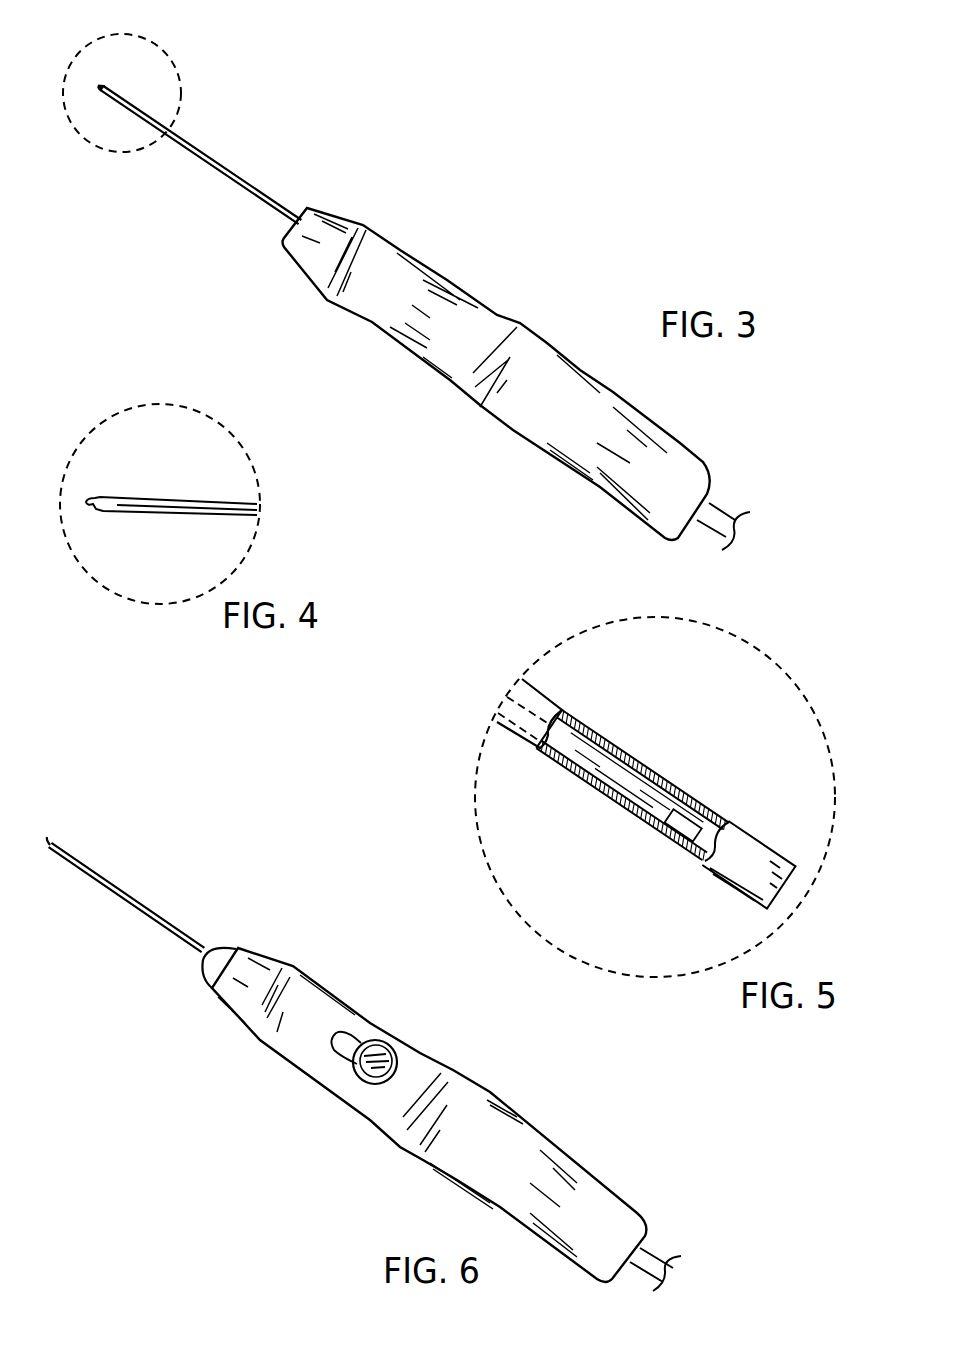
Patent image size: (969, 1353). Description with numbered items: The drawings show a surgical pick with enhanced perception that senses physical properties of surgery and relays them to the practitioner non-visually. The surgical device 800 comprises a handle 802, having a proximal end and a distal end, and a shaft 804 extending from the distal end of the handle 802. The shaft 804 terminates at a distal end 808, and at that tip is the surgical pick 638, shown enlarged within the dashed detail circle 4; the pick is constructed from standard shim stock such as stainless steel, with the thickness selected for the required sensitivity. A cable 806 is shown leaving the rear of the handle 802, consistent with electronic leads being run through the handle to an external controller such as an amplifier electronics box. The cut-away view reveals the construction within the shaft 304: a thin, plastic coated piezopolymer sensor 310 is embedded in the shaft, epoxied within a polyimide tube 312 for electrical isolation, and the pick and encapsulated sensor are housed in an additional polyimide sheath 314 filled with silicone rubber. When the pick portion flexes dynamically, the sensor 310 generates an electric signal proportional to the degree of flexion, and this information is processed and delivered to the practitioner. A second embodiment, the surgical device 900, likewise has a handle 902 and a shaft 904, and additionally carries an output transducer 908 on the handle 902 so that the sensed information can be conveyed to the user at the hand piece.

In FIG. 3, the detail circle for FIG. 4 is at (118, 34).
In FIG. 3, the surgical device 800 is at (620, 306).
In FIG. 3, the handle 802 is at (367, 226).
In FIG. 3, the shaft 804 is at (197, 148).
In FIG. 3, the cable 806 is at (722, 511).
In FIG. 3, the distal end 808 is at (112, 89).
In FIG. 4, the surgical pick 638 is at (90, 497).
In FIG. 5, the shaft 304 is at (795, 848).
In FIG. 5, the sensor 310 is at (636, 778).
In FIG. 5, the polyimide tube 312 is at (697, 814).
In FIG. 5, the polyimide sheath 314 is at (710, 831).
In FIG. 6, the surgical device 900 is at (597, 1122).
In FIG. 6, the handle 902 is at (438, 1062).
In FIG. 6, the shaft 904 is at (112, 883).
In FIG. 6, the button 908 is at (380, 1041).